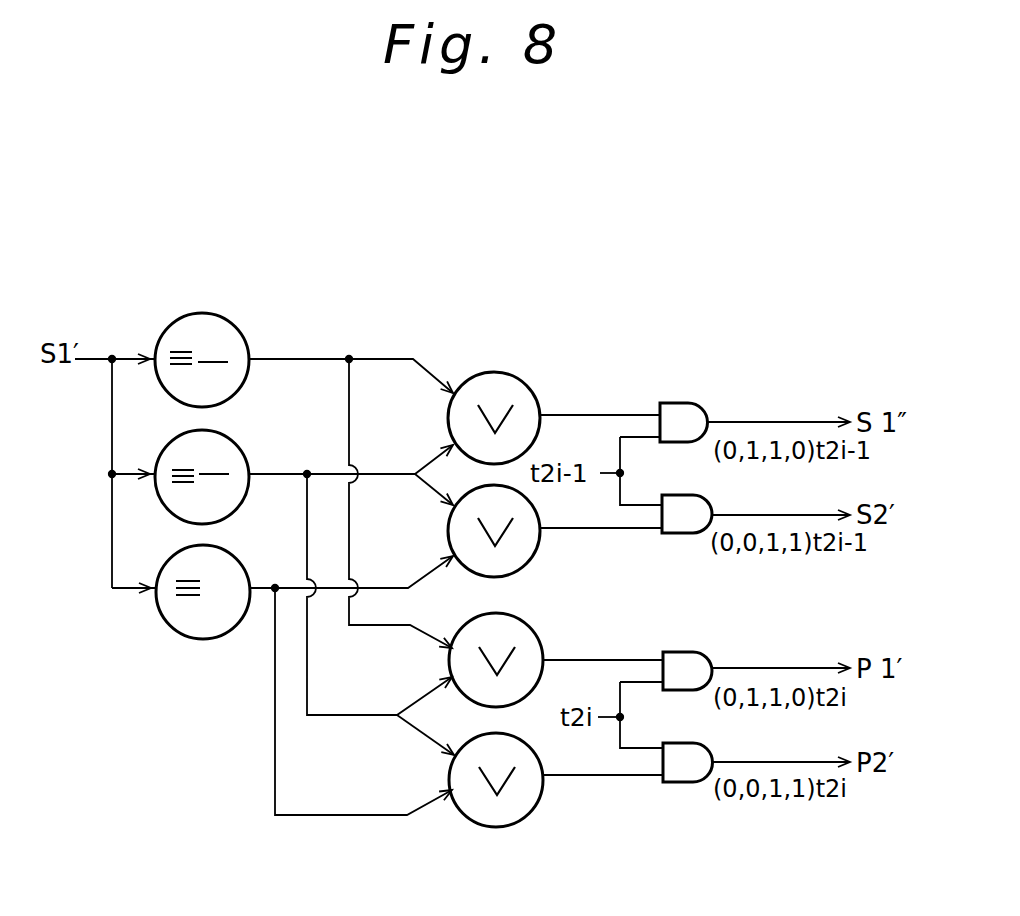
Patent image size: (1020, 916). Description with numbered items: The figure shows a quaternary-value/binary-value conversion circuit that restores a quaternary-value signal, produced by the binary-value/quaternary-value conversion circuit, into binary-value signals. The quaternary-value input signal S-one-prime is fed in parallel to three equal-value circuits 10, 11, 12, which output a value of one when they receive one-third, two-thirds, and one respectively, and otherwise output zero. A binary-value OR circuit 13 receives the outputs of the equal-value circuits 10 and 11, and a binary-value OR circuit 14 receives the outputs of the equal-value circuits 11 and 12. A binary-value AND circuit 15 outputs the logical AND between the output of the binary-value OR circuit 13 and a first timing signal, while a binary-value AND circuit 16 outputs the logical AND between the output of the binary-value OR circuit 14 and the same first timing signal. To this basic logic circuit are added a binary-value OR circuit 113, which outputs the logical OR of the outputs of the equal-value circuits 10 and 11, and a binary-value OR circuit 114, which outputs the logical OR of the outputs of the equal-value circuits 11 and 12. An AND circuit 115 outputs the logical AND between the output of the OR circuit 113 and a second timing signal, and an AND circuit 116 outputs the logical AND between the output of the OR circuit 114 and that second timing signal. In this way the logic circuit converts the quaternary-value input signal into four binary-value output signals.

The equal-value circuit 10 is at (233, 337).
The equal-value circuit 11 is at (233, 452).
The equal-value circuit 12 is at (233, 568).
The binary-value OR circuit 13 is at (522, 393).
The binary-value OR circuit 14 is at (525, 548).
The binary-value AND circuit 15 is at (690, 408).
The binary-value AND circuit 16 is at (676, 523).
The binary-value OR circuit 113 is at (530, 640).
The binary-value OR circuit 114 is at (530, 800).
The AND circuit 115 is at (690, 656).
The AND circuit 116 is at (682, 775).